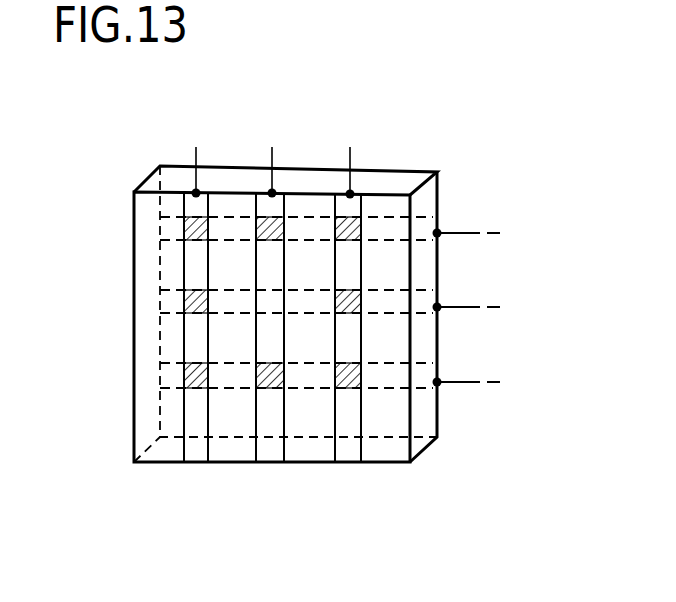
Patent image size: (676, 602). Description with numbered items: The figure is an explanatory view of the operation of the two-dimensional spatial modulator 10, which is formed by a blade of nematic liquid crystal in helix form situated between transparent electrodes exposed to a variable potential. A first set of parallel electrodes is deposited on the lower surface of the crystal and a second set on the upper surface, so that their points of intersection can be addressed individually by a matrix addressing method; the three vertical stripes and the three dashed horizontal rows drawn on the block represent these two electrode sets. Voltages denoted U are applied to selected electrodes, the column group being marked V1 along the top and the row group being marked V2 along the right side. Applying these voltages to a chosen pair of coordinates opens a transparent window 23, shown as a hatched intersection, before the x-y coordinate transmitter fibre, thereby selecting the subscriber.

The two-dimensional spatial modulator 10 is at (437, 430).
The transparent window 23 is at (271, 303).
The column voltage group V1 is at (340, 106).
The row voltage group V2 is at (538, 242).